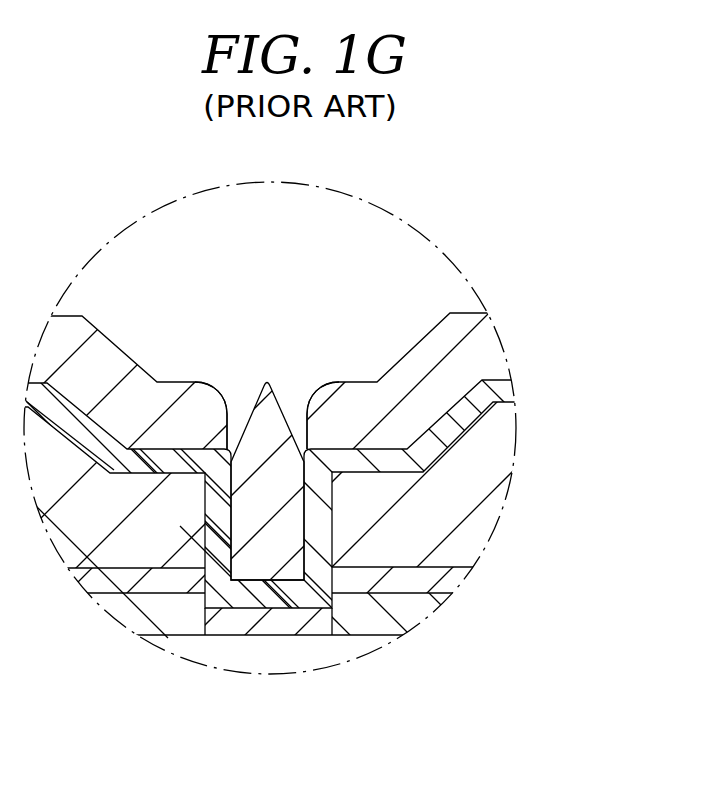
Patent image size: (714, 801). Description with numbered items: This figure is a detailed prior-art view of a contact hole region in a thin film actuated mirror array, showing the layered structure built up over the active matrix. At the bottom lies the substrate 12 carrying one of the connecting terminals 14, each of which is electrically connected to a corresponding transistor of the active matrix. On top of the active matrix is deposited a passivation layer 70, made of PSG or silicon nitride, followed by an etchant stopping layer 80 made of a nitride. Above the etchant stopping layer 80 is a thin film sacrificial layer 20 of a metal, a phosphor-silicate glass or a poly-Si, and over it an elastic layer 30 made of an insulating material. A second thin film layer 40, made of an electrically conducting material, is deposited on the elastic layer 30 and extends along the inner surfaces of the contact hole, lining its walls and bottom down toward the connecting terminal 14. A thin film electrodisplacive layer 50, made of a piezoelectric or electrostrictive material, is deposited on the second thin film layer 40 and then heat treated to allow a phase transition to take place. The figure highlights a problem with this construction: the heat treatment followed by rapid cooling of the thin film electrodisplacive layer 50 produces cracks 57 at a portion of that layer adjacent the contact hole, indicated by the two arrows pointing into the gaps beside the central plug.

The substrate 12 is at (362, 643).
The connecting terminal 14 is at (272, 557).
The thin film sacrificial layer 20 is at (473, 548).
The elastic layer 30 is at (488, 455).
The second thin film layer 40 is at (500, 395).
The thin film electrodisplacive layer 50 is at (488, 322).
The cracks 57 is at (301, 384).
The passivation layer 70 is at (410, 612).
The etchant stopping layer 80 is at (450, 577).